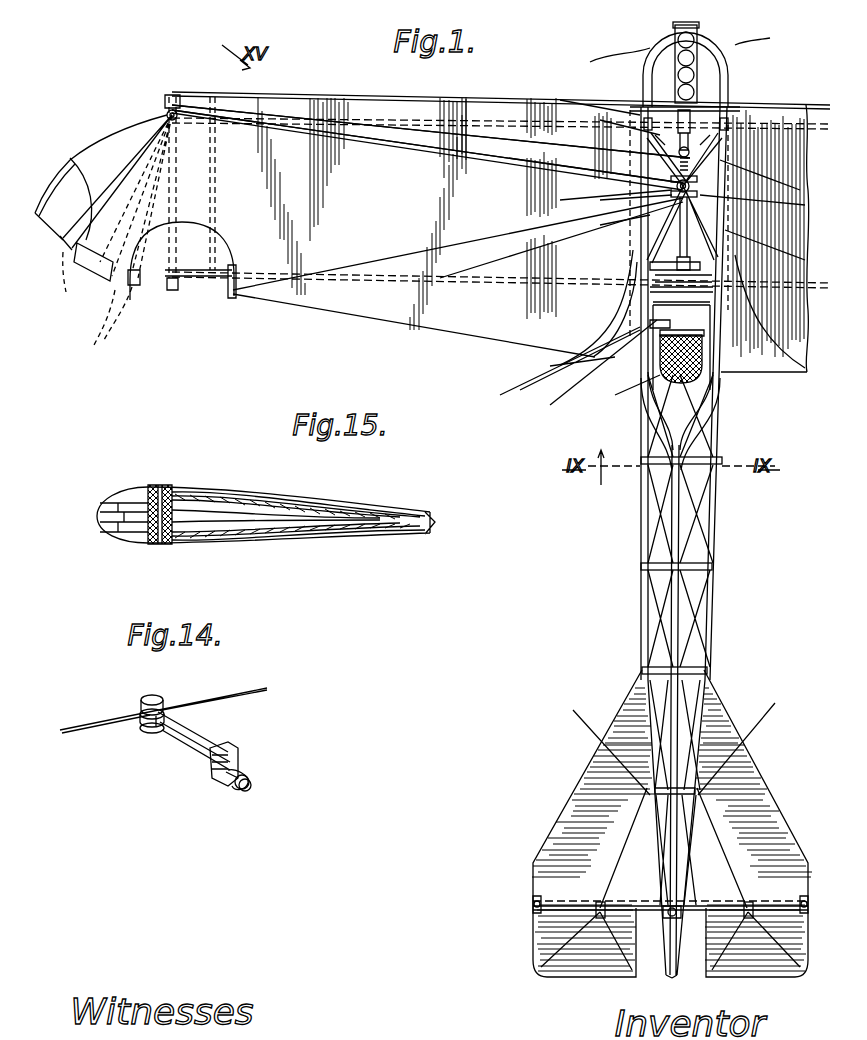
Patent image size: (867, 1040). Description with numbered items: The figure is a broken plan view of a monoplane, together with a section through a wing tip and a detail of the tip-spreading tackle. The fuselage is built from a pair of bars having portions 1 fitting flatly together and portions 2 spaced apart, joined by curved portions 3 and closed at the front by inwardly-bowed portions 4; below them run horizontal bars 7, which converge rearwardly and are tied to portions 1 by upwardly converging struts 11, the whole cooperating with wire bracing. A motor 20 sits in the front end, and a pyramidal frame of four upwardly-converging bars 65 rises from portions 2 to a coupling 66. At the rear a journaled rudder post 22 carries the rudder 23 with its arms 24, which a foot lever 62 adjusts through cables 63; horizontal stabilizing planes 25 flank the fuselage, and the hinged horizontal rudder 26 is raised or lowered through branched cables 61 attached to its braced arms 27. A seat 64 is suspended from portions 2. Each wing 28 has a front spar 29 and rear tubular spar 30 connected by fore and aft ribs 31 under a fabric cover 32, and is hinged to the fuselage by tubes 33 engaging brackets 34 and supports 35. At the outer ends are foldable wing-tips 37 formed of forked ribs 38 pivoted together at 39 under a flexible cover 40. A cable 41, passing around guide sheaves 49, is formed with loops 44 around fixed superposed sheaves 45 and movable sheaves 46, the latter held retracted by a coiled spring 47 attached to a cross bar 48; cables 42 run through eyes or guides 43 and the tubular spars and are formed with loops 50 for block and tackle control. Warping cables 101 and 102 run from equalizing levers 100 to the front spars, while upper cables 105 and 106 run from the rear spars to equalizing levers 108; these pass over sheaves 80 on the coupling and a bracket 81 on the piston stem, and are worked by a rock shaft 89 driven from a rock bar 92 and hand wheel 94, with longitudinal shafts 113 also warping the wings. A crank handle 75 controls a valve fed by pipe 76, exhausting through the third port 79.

In FIG. 1, the portions of fuselage bars 1 is at (672, 544).
In FIG. 1, the spaced-apart portions of fuselage bars 2 is at (645, 78).
In FIG. 1, the curved portions 3 is at (660, 400).
In FIG. 1, the inwardly-bowed portions 4 is at (677, 43).
In FIG. 1, the horizontal bars 7 is at (640, 440).
In FIG. 1, the upwardly converging struts 11 is at (655, 470).
In FIG. 1, the motor 20 is at (677, 40).
In FIG. 1, the rudder post 22 is at (672, 918).
In FIG. 1, the rudder 23 is at (540, 940).
In FIG. 1, the arms 24 is at (748, 918).
In FIG. 1, the horizontal stabilizing planes 25 is at (585, 763).
In FIG. 1, the horizontal rudder 26 is at (540, 970).
In FIG. 1, the braced arms 27 is at (598, 915).
In FIG. 1, the wings 28 is at (750, 258).
In FIG. 15, the wings 28 is at (380, 512).
In FIG. 1, the front spar 29 is at (396, 110).
In FIG. 1, the rear tubular spar 30 is at (220, 292).
In FIG. 1, the fore and aft ribs 31 is at (228, 252).
In FIG. 1, the fabric cover 32 is at (335, 310).
In FIG. 1, the tubes 33 is at (655, 258).
In FIG. 1, the brackets 34 is at (570, 100).
In FIG. 1, the supports 35 is at (632, 300).
In FIG. 1, the foldable wing-tips 37 is at (103, 140).
In FIG. 1, the forked ribs 38 is at (128, 284).
In FIG. 15, the forked ribs 38 is at (245, 522).
In FIG. 1, the pivot of forked ribs 39 is at (172, 110).
In FIG. 15, the pivot of forked ribs 39 is at (158, 486).
In FIG. 1, the flexible cover 40 is at (90, 157).
In FIG. 15, the flexible cover 40 is at (285, 508).
In FIG. 1, the cable 41 is at (160, 105).
In FIG. 14, the cable 41 is at (110, 712).
In FIG. 1, the cables 42 is at (126, 313).
In FIG. 1, the eyes or guides 43 is at (90, 307).
In FIG. 1, the loops 44 is at (692, 120).
In FIG. 14, the loops 44 is at (190, 745).
In FIG. 1, the fixed superposed sheaves 45 is at (640, 118).
In FIG. 14, the fixed superposed sheaves 45 is at (158, 700).
In FIG. 1, the movable sheaves 46 is at (730, 122).
In FIG. 14, the movable sheaves 46 is at (240, 748).
In FIG. 1, the coiled spring 47 is at (695, 160).
In FIG. 14, the coiled spring 47 is at (250, 780).
In FIG. 1, the cross bar 48 is at (725, 150).
In FIG. 1, the guide sheaves 49 is at (174, 100).
In FIG. 1, the loops 50 is at (712, 302).
In FIG. 1, the branched cables 61 is at (598, 846).
In FIG. 1, the foot lever 62 is at (558, 367).
In FIG. 1, the cables 63 is at (573, 710).
In FIG. 1, the seat 64 is at (626, 392).
In FIG. 1, the upwardly-converging bars 65 is at (640, 135).
In FIG. 1, the coupling 66 is at (668, 185).
In FIG. 1, the crank handle 75 is at (592, 368).
In FIG. 1, the pipe 76 is at (560, 285).
In FIG. 1, the third port 79 is at (695, 183).
In FIG. 1, the grooved pulleys or sheaves 80 is at (710, 222).
In FIG. 1, the bracket 81 is at (752, 207).
In FIG. 1, the horizontal rock shaft 89 is at (627, 203).
In FIG. 1, the rock bar 92 is at (600, 285).
In FIG. 1, the hand wheel 94 is at (705, 345).
In FIG. 1, the equalizing levers 100 is at (545, 120).
In FIG. 1, the cables 101 is at (405, 130).
In FIG. 1, the cables 102 is at (496, 150).
In FIG. 1, the upper set of cables 105 is at (452, 245).
In FIG. 1, the upper set of cables 106 is at (478, 265).
In FIG. 1, the equalizing levers 108 is at (594, 204).
In FIG. 1, the longitudinal shafts 113 is at (660, 245).